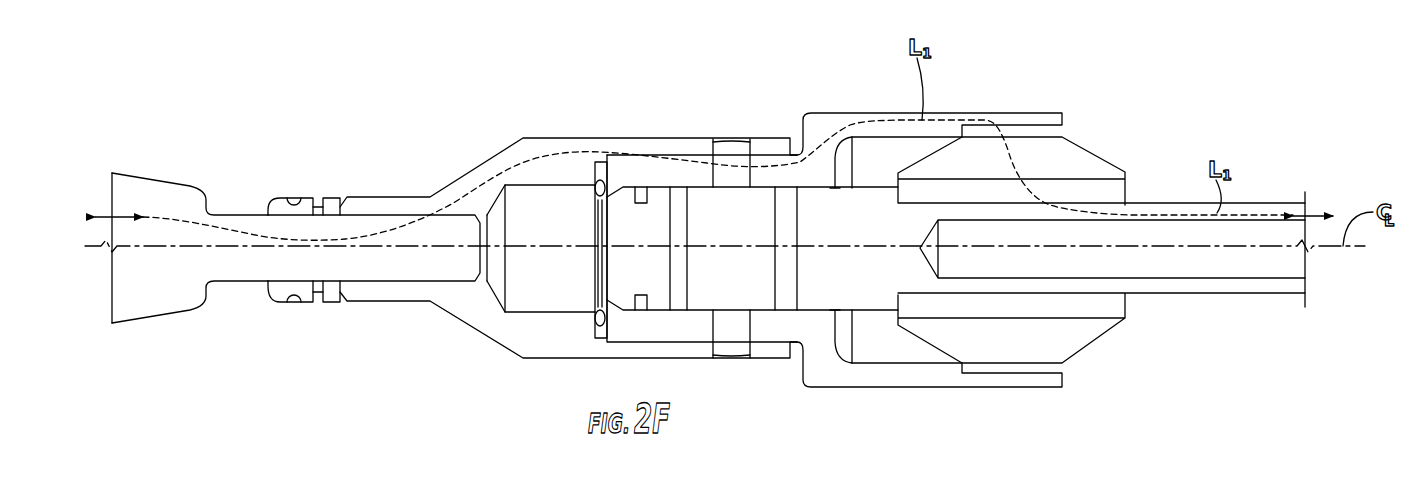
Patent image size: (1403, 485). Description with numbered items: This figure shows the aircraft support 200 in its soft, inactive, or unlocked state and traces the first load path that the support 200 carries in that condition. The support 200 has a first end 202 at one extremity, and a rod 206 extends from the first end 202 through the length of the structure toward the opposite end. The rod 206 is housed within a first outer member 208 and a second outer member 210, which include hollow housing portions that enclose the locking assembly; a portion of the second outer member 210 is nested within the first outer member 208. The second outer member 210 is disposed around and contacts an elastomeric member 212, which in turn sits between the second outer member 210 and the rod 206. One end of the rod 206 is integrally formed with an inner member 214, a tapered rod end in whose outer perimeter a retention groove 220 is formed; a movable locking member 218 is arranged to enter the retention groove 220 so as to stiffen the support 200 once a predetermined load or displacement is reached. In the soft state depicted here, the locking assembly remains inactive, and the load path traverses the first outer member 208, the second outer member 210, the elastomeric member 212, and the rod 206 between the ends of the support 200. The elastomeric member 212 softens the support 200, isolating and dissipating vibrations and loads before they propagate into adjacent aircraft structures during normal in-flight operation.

The support 200 is at (285, 112).
The first end 202 is at (125, 334).
The rod 206 is at (1203, 283).
The first outer member 208 is at (470, 170).
The second outer member 210 is at (843, 375).
The elastomeric member 212 is at (1073, 157).
The inner member 214 is at (657, 198).
The locking member 218 is at (597, 184).
The retention groove 220 is at (637, 180).